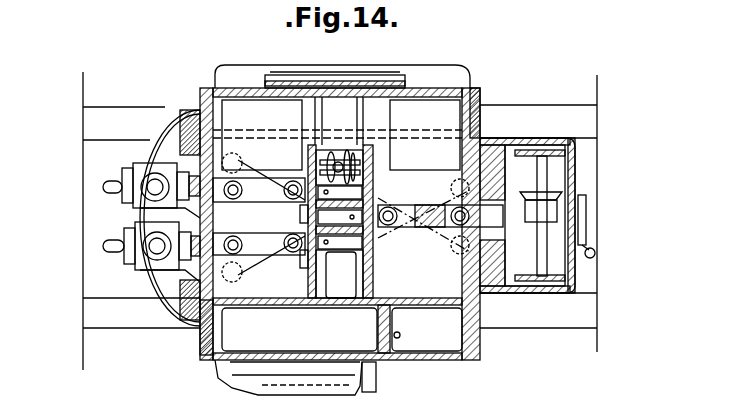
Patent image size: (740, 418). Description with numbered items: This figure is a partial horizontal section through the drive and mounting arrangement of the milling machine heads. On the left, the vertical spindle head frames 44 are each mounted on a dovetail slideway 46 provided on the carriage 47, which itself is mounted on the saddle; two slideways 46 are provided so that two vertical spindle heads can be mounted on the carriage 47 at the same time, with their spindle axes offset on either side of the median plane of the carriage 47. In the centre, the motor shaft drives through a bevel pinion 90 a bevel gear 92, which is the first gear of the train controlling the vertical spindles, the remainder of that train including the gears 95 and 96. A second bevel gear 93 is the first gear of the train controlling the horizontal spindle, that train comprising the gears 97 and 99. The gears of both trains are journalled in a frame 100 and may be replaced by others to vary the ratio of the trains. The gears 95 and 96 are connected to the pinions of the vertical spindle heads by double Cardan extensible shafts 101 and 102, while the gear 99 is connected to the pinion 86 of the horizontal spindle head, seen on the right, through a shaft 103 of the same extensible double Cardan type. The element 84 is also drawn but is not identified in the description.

The frame 44 is at (160, 290).
The dovetail slideway 46 is at (178, 165).
The carriage 47 is at (196, 330).
The column plate 84 is at (310, 152).
The pinion 86 is at (505, 300).
The bevel pinion 90 is at (338, 163).
The bevel gear 92 is at (328, 160).
The bevel gear 93 is at (350, 160).
The gear 95 is at (310, 214).
The gear 96 is at (310, 262).
The gear 97 is at (373, 158).
The gear 99 is at (374, 198).
The frame 100 is at (366, 274).
The double Cardan extensible shaft 101 is at (297, 178).
The double Cardan extensible shaft 102 is at (260, 240).
The shaft 103 is at (432, 230).